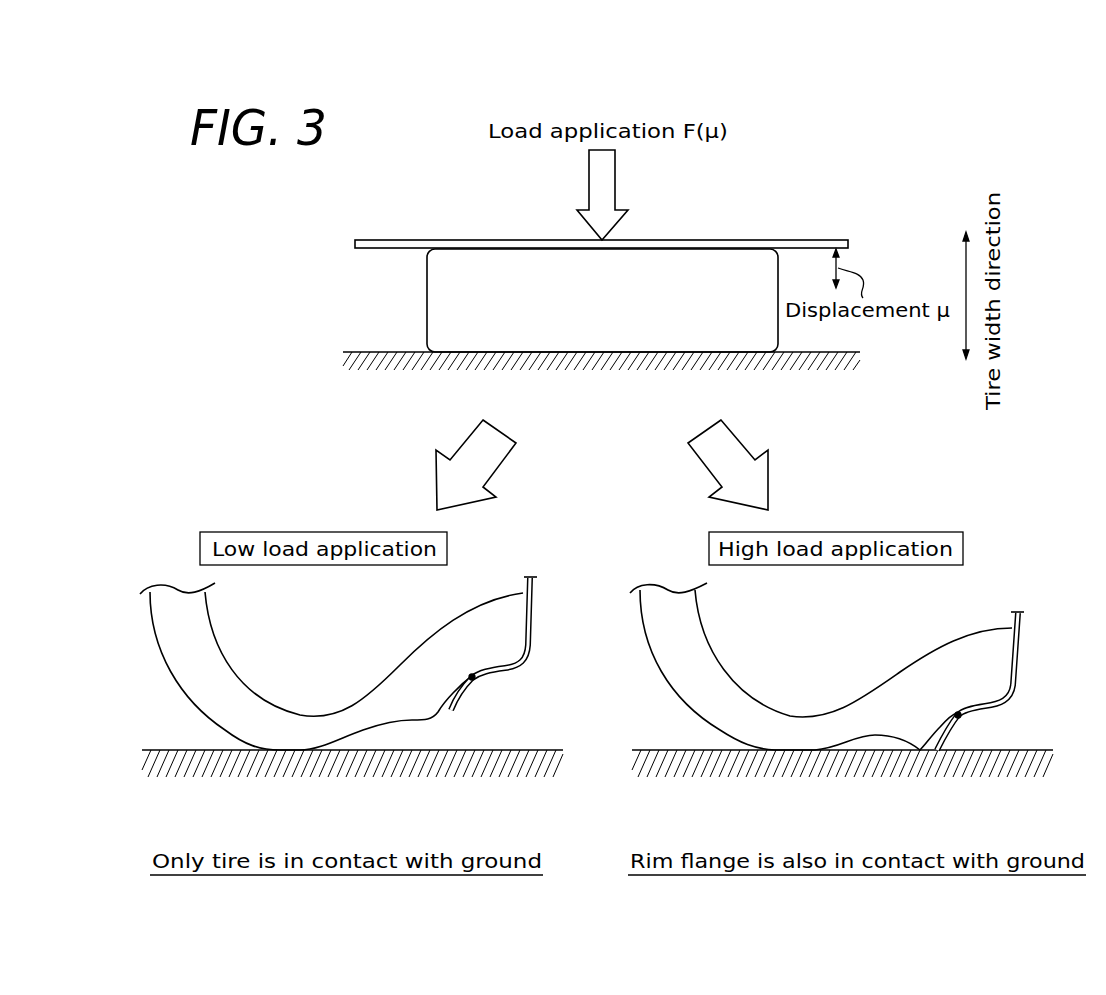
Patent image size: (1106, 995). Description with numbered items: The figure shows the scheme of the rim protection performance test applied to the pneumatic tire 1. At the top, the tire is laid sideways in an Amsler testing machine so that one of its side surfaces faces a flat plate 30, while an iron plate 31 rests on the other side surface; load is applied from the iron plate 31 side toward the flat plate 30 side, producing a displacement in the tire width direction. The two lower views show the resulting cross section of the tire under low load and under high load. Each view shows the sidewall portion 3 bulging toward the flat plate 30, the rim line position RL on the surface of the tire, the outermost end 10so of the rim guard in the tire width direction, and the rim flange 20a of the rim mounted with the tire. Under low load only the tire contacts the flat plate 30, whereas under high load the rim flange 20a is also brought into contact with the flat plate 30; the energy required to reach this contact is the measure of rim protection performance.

The pneumatic tire 1 is at (397, 282).
The sidewall portion 3 is at (278, 703).
The flat plate 30 is at (377, 353).
The iron plate 31 is at (393, 240).
The rim line position RL is at (472, 677).
The rim flange 20a is at (462, 693).
The outermost end of the rim guard 10so is at (430, 720).